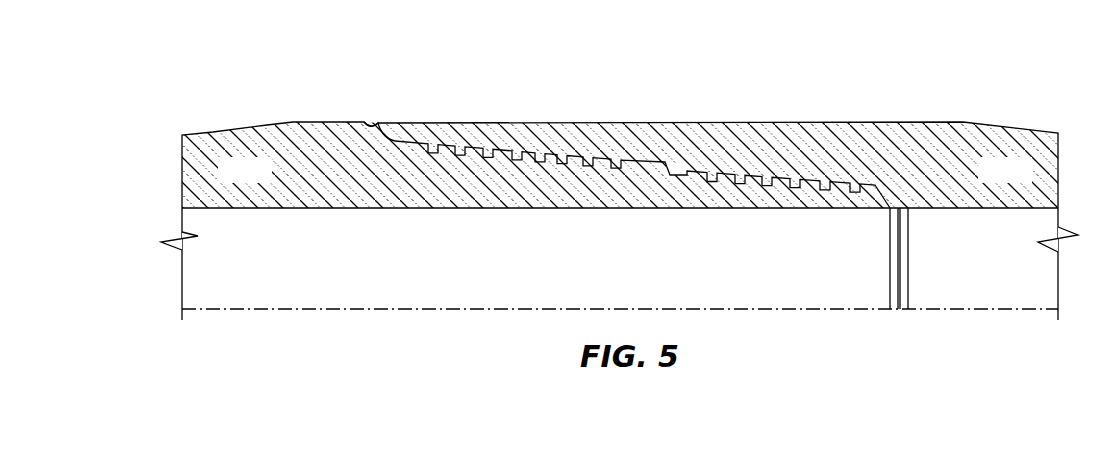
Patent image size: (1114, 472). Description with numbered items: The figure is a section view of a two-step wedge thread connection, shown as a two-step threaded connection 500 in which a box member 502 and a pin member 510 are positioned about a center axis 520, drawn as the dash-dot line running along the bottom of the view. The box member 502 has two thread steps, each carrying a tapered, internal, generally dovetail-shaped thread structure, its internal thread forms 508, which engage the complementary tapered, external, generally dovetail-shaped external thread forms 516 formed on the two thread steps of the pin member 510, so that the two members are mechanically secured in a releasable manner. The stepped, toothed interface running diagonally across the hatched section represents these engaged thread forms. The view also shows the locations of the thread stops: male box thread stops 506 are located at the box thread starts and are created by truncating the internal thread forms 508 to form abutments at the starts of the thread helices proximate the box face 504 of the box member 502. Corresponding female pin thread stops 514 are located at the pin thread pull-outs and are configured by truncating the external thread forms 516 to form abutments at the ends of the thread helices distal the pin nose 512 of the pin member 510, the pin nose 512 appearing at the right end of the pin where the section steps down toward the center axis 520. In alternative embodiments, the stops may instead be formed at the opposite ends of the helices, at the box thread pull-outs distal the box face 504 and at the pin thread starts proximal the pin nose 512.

The two-step threaded connection 500 is at (965, 84).
The box member 502 is at (1028, 181).
The box face 504 is at (370, 124).
The male box thread stop 506 is at (402, 143).
The internal thread form 508 is at (516, 146).
The pin member 510 is at (268, 181).
The pin nose 512 is at (898, 195).
The female pin thread stop 514 is at (400, 150).
The external thread form 516 is at (516, 160).
The center axis 520 is at (407, 308).